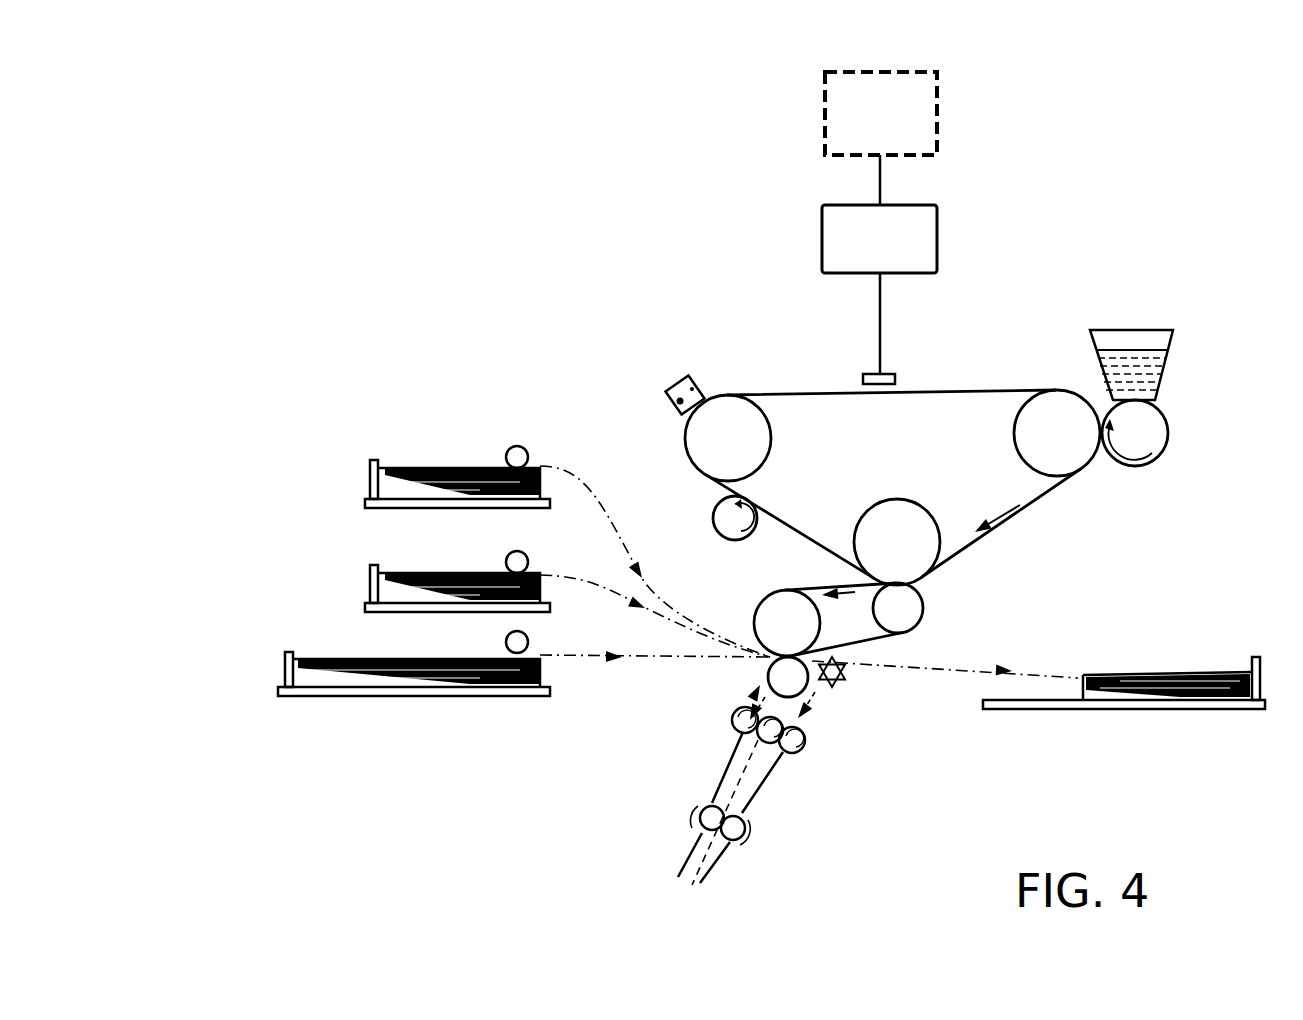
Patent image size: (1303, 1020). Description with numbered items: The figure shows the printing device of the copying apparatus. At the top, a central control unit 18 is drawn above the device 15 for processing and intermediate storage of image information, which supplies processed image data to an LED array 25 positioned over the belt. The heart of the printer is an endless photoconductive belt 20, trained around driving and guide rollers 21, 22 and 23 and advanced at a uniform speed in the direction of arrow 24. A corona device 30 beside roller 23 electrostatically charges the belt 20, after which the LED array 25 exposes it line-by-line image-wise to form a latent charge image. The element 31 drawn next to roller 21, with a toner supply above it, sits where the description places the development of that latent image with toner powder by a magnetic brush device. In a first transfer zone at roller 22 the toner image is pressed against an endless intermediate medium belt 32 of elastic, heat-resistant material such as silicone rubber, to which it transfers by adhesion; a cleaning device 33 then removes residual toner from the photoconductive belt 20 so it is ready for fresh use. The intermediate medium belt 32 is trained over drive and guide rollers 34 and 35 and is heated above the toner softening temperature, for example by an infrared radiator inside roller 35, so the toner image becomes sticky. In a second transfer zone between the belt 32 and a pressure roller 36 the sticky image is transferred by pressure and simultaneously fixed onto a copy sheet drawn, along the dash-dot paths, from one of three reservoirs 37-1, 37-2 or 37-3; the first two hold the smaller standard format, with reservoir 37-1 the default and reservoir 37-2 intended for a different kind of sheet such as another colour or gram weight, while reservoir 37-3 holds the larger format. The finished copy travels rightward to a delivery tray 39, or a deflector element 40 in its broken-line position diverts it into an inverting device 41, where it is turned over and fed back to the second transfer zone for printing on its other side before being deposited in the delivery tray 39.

The central control unit 18 is at (873, 72).
The device for processing and intermediate storage of image information 15 is at (937, 225).
The LED array 25 is at (890, 372).
The endless photoconductive belt 20 is at (835, 392).
The corona device 30 is at (678, 385).
The driving and guide roller 23 is at (770, 435).
The driving and guide roller 21 is at (1018, 430).
The developing roller 31 is at (1160, 430).
The cleaning device 33 is at (715, 510).
The driving and guide roller 22 is at (897, 512).
The arrow 24 is at (997, 505).
The intermediate medium belt 32 is at (815, 588).
The drive and guide roller 35 is at (758, 612).
The drive and guide roller 34 is at (908, 607).
The pressure roller 36 is at (783, 680).
The deflector element 40 is at (840, 685).
The inverting device 41 is at (770, 796).
The copy sheet reservoir 37-1 is at (428, 452).
The copy sheet reservoir 37-2 is at (348, 573).
The copy sheet reservoir 37-3 is at (330, 647).
The delivery tray 39 is at (1172, 660).